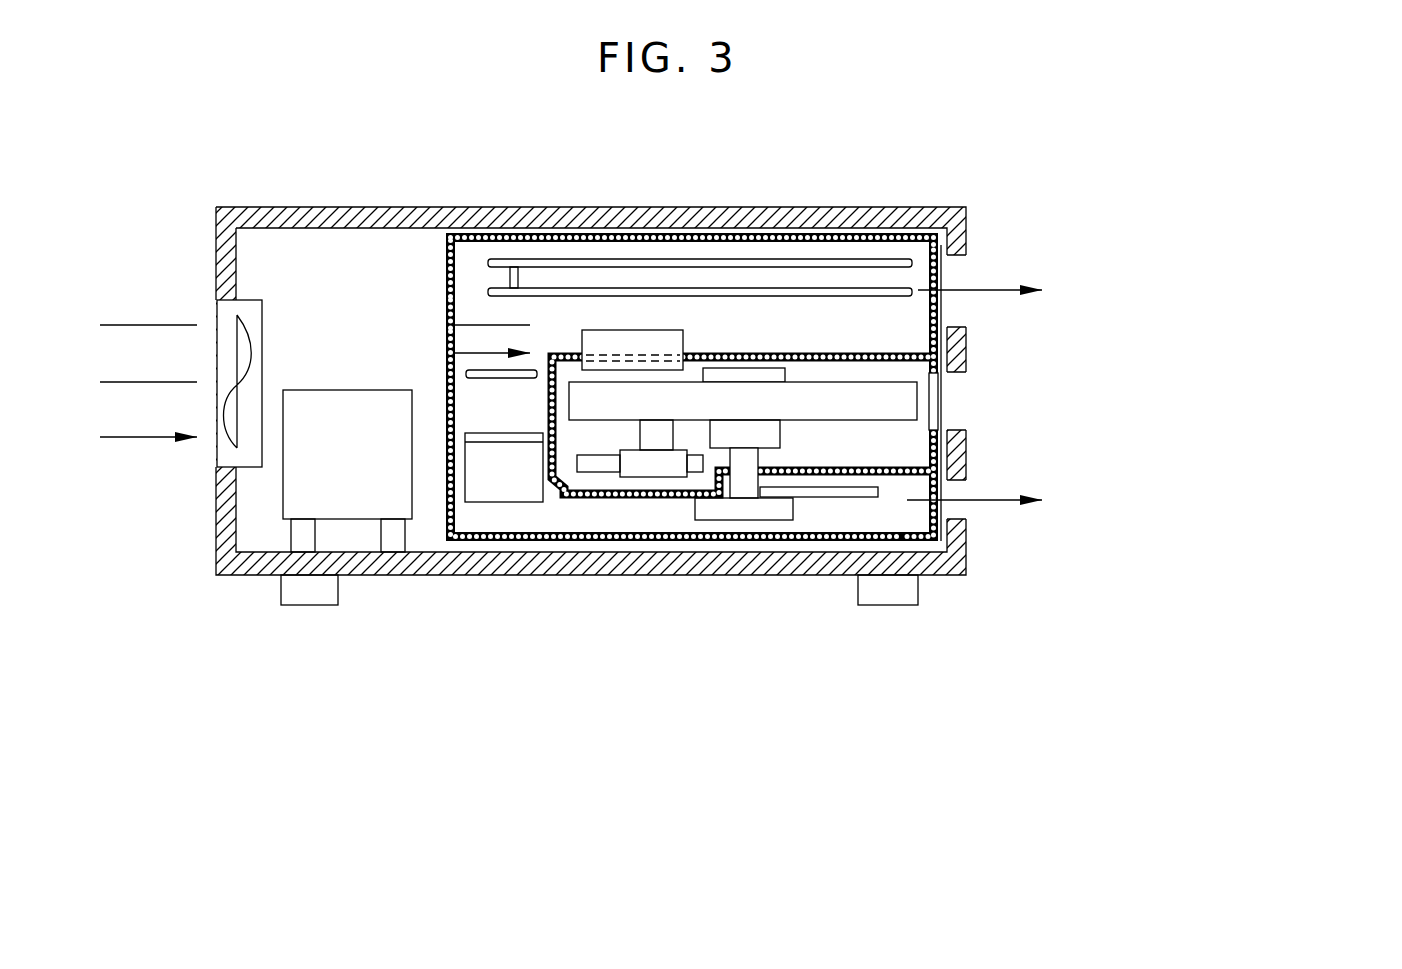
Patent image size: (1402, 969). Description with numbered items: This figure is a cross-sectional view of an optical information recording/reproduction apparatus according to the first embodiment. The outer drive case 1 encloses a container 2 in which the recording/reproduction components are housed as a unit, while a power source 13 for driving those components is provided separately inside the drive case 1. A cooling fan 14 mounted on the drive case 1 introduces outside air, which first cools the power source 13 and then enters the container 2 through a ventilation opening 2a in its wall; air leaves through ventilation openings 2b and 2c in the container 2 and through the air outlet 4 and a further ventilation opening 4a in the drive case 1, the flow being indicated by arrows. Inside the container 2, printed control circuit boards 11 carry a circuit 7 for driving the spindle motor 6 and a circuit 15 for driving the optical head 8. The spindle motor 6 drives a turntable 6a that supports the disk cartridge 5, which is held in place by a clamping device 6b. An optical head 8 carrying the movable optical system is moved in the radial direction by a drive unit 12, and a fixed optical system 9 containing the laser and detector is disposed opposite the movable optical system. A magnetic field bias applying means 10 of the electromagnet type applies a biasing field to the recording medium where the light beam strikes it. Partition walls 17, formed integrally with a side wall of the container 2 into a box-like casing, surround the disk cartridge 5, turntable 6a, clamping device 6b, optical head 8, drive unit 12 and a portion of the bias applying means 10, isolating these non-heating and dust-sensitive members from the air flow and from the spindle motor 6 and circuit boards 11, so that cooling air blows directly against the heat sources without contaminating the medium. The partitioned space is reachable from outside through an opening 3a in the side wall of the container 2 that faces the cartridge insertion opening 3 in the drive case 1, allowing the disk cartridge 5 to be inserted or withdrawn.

The drive case 1 is at (257, 565).
The container 2 is at (928, 548).
The ventilation opening 2a is at (445, 315).
The ventilation opening 2b is at (937, 272).
The ventilation opening 2c is at (965, 518).
The cartridge insertion opening 3 is at (963, 413).
The opening 3a is at (938, 402).
The air outlet 4 is at (958, 283).
The ventilation opening 4a is at (958, 487).
The disk cartridge 5 is at (866, 392).
The spindle motor 6 is at (738, 510).
The turntable 6a is at (772, 436).
The clamp means 6b is at (768, 368).
The circuit for driving the spindle motor 7 is at (820, 492).
The optical head 8 is at (653, 472).
The fixed optical system 9 is at (507, 487).
The magnetic field bias applying means 10 is at (558, 195).
The printed control circuit boards 11 is at (658, 290).
The drive unit 12 is at (597, 472).
The power source 13 is at (327, 392).
The cooling fan 14 is at (227, 317).
The circuit for driving the optical head 15 is at (393, 316).
The partition walls 17 is at (613, 498).